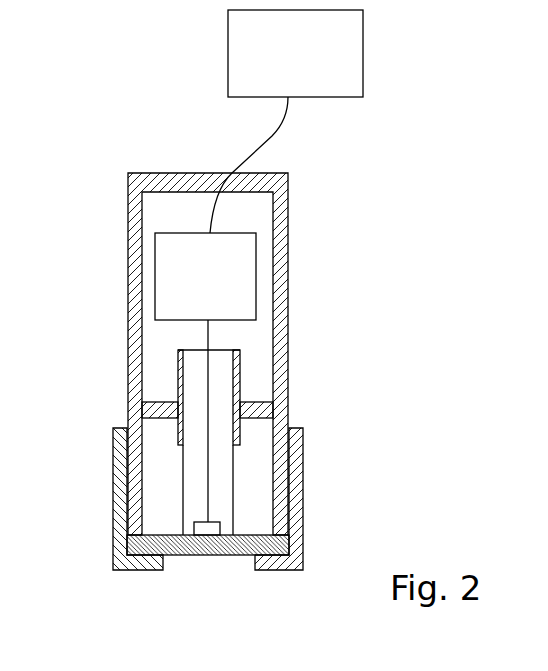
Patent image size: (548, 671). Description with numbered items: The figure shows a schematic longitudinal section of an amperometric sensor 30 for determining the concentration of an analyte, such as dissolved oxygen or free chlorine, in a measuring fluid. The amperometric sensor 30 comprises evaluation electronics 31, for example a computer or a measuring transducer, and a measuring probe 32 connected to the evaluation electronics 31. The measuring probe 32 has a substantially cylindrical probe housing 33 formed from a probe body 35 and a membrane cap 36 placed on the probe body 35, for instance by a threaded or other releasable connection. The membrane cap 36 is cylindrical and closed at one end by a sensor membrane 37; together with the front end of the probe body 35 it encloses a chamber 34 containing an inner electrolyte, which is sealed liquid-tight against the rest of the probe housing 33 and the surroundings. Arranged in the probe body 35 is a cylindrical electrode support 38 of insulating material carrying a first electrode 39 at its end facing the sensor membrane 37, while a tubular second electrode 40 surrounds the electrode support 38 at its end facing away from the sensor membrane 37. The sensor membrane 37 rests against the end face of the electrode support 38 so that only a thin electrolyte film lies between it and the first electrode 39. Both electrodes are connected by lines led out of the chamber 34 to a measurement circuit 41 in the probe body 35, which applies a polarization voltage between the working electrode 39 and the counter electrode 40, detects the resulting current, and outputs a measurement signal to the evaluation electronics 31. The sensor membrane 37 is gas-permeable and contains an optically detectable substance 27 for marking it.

The amperometric sensor 30 is at (418, 250).
The evaluation electronics 31 is at (283, 66).
The measuring probe 32 is at (128, 417).
The probe housing 33 is at (138, 281).
The chamber 34 is at (257, 456).
The probe body 35 is at (282, 410).
The membrane cap 36 is at (297, 495).
The sensor membrane 37 is at (230, 555).
The electrode support 38 is at (190, 487).
The first electrode 39 is at (212, 555).
The second electrode 40 is at (240, 371).
The measurement circuit 41 is at (194, 292).
The optically detectable substance 27 is at (180, 555).